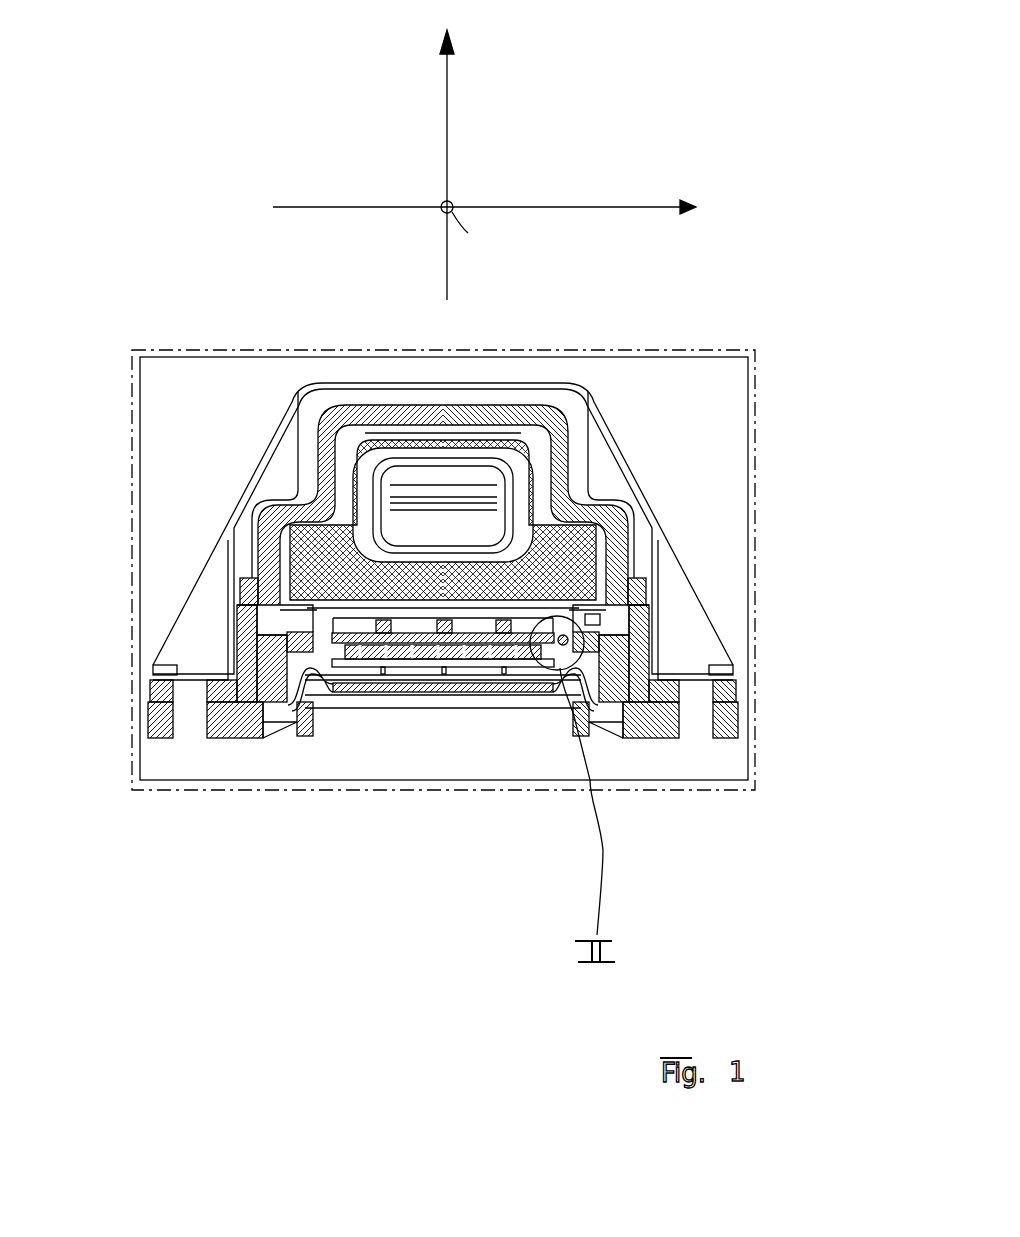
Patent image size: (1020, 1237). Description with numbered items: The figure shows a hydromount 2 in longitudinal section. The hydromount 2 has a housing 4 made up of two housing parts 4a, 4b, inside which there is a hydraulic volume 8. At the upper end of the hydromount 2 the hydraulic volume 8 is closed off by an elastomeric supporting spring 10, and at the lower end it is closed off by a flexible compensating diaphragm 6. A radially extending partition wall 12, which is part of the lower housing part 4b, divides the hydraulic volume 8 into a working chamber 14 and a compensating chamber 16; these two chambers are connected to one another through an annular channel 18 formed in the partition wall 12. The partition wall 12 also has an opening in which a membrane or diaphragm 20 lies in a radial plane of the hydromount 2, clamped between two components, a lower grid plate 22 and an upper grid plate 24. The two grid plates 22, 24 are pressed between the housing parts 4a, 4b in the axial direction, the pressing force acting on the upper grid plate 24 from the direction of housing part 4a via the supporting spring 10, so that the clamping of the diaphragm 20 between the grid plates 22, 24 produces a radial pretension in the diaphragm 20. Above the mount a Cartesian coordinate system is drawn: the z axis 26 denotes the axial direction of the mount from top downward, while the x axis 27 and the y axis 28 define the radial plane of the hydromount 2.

The hydromount 2 is at (581, 535).
The housing 4 is at (541, 405).
The housing part 4a is at (360, 410).
The housing part 4b is at (264, 740).
The compensating diaphragm 6 is at (446, 692).
The hydraulic volume 8 is at (242, 604).
The elastomeric supporting spring 10 is at (312, 545).
The partition wall 12 is at (323, 675).
The working chamber 14 is at (572, 640).
The compensating chamber 16 is at (527, 665).
The annular channel 18 is at (580, 667).
The diaphragm 20 is at (403, 633).
The lower grid plate 22 is at (437, 655).
The upper grid plate 24 is at (592, 620).
The z axis 26 is at (450, 122).
The x axis 27 is at (570, 207).
The y axis 28 is at (453, 198).